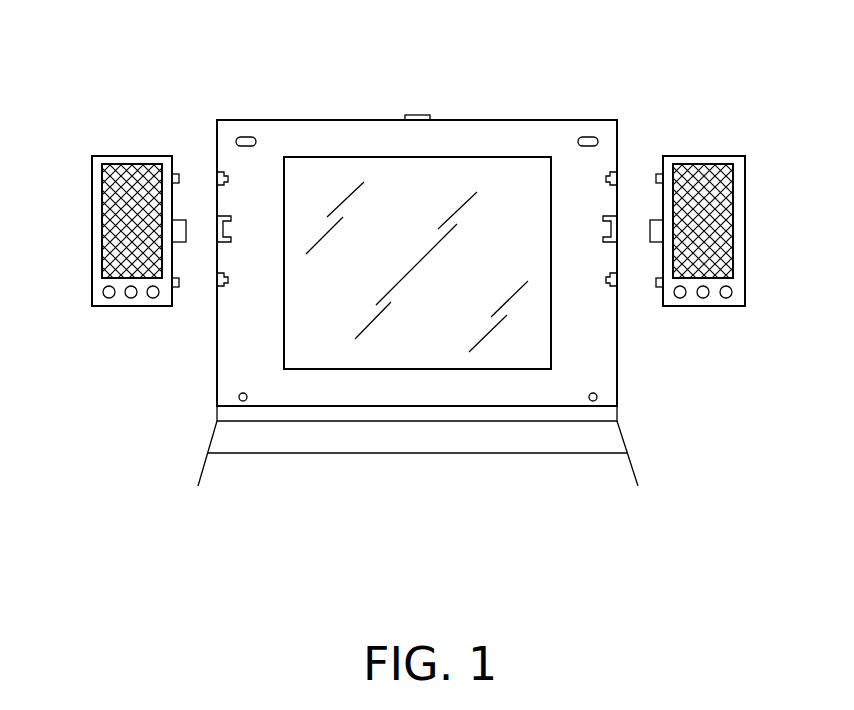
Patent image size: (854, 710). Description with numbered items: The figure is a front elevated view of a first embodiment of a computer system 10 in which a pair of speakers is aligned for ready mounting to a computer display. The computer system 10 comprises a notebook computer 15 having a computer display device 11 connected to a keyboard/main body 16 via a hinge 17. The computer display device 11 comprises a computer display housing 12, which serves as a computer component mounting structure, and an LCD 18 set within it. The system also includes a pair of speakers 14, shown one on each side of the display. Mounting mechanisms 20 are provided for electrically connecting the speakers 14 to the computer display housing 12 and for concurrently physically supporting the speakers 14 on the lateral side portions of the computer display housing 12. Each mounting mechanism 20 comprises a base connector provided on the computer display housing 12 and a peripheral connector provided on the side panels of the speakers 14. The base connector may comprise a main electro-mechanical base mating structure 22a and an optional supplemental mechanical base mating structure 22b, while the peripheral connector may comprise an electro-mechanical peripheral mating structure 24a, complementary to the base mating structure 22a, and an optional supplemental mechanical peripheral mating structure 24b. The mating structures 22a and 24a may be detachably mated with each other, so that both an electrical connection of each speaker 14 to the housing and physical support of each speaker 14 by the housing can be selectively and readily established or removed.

The computer system 10 is at (185, 74).
The computer display device 11 is at (527, 117).
The computer display housing 12 is at (380, 137).
The speakers 14 is at (130, 155).
The notebook computer 15 is at (397, 503).
The keyboard/main body 16 is at (608, 437).
The hinge 17 is at (612, 414).
The LCD 18 is at (458, 172).
The mounting mechanisms 20 is at (192, 153).
The electro-mechanical base mating structure 22a is at (232, 233).
The supplemental mechanical base mating structure 22b is at (228, 182).
The electro-mechanical peripheral mating structure 24a is at (178, 232).
The supplemental mechanical peripheral mating structure 24b is at (179, 178).